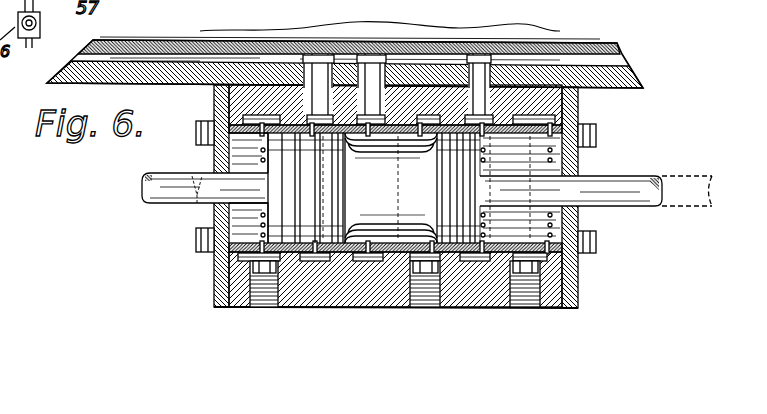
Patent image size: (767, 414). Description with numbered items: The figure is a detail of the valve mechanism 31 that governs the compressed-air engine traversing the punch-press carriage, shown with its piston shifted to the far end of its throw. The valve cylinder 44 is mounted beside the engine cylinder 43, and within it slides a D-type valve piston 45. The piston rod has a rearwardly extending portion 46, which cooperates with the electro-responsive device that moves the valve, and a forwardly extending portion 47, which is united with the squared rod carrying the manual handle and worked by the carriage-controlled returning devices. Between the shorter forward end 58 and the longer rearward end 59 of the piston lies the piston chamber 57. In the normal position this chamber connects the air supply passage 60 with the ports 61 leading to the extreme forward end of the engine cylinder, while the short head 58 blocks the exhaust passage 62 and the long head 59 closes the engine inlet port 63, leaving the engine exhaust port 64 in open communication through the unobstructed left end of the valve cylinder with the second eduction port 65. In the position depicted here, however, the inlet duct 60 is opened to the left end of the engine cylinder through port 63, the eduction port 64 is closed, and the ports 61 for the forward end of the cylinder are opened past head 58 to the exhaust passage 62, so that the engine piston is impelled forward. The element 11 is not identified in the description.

The main body 11 is at (633, 0).
The valve mechanism 31 is at (201, 286).
The engine cylinder 43 is at (603, 42).
The valve cylinder 44 is at (205, 250).
The valve piston 45 is at (362, 308).
The rearwardly extending portion of piston rod 46 is at (148, 187).
The forwardly extending portion of piston rod 47 is at (635, 187).
The piston chamber 57 is at (392, 142).
The shorter forward end 58 is at (442, 178).
The longer rearward end 59 is at (337, 193).
The air supply passage 60 is at (410, 251).
The ports 61 is at (485, 112).
The exhaust passage 62 is at (548, 268).
The engine inlet port 63 is at (380, 112).
The engine exhaust port 64 is at (312, 112).
The second eduction port 65 is at (253, 307).